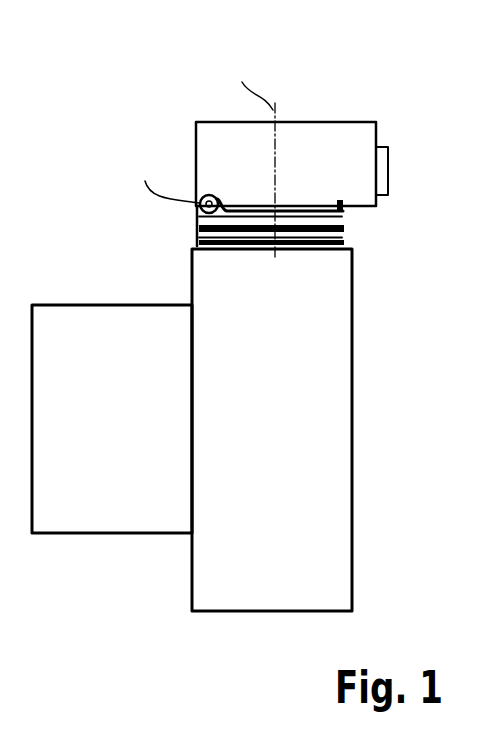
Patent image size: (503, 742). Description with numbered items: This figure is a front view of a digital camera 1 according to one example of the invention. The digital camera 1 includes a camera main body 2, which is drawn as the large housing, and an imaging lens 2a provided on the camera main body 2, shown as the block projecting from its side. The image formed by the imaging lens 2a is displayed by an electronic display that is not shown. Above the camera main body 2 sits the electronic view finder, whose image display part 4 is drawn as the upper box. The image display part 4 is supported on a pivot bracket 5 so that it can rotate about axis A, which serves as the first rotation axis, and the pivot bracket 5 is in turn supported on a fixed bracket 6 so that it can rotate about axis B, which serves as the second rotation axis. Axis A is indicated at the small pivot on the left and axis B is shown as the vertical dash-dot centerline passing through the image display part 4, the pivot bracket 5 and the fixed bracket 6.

The digital camera 1 is at (158, 80).
The camera main body 2 is at (338, 435).
The imaging lens 2a is at (97, 315).
The image display part 4 is at (353, 140).
The pivot bracket 5 is at (342, 219).
The fixed bracket 6 is at (347, 239).